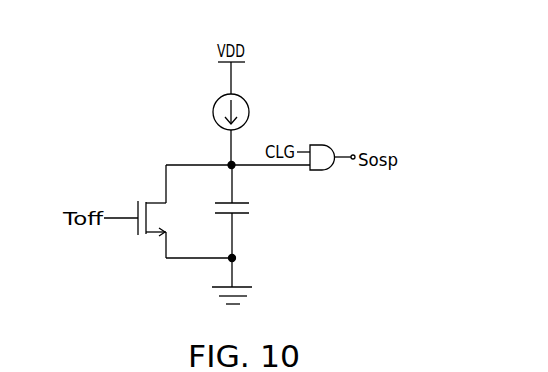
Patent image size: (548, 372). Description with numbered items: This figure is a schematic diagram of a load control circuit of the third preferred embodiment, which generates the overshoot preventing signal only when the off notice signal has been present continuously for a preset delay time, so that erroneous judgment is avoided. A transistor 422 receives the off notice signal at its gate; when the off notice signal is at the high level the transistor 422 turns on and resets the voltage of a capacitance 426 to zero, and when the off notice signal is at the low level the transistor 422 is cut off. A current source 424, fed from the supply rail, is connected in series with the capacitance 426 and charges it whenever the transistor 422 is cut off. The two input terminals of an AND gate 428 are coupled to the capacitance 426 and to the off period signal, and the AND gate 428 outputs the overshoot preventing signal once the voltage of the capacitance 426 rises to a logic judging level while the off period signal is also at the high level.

The transistor 422 is at (169, 205).
The current source 424 is at (217, 123).
The capacitance 426 is at (250, 210).
The AND gate 428 is at (322, 170).